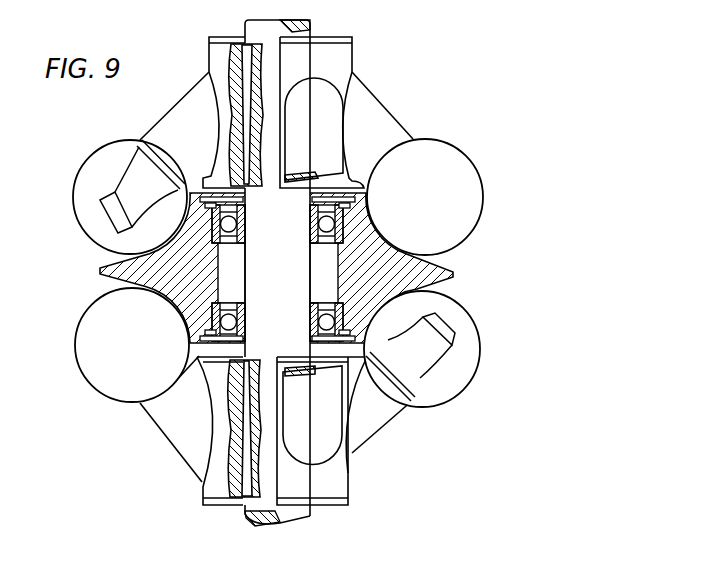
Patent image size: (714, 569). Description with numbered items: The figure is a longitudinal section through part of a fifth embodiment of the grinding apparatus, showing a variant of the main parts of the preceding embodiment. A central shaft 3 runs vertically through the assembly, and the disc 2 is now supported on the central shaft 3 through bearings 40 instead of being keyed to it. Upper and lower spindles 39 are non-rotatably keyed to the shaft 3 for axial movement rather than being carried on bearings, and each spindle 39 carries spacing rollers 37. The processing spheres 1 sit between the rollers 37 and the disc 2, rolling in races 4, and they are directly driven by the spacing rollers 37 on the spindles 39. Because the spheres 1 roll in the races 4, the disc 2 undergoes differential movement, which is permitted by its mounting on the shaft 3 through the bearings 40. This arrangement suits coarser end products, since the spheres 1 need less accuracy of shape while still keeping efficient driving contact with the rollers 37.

The processing spheres 1 is at (470, 226).
The disc 2 is at (120, 274).
The central shaft 3 is at (309, 516).
The races 4 is at (385, 237).
The spacing rollers 37 is at (118, 193).
The spindles 39 is at (346, 71).
The bearings 40 is at (330, 321).